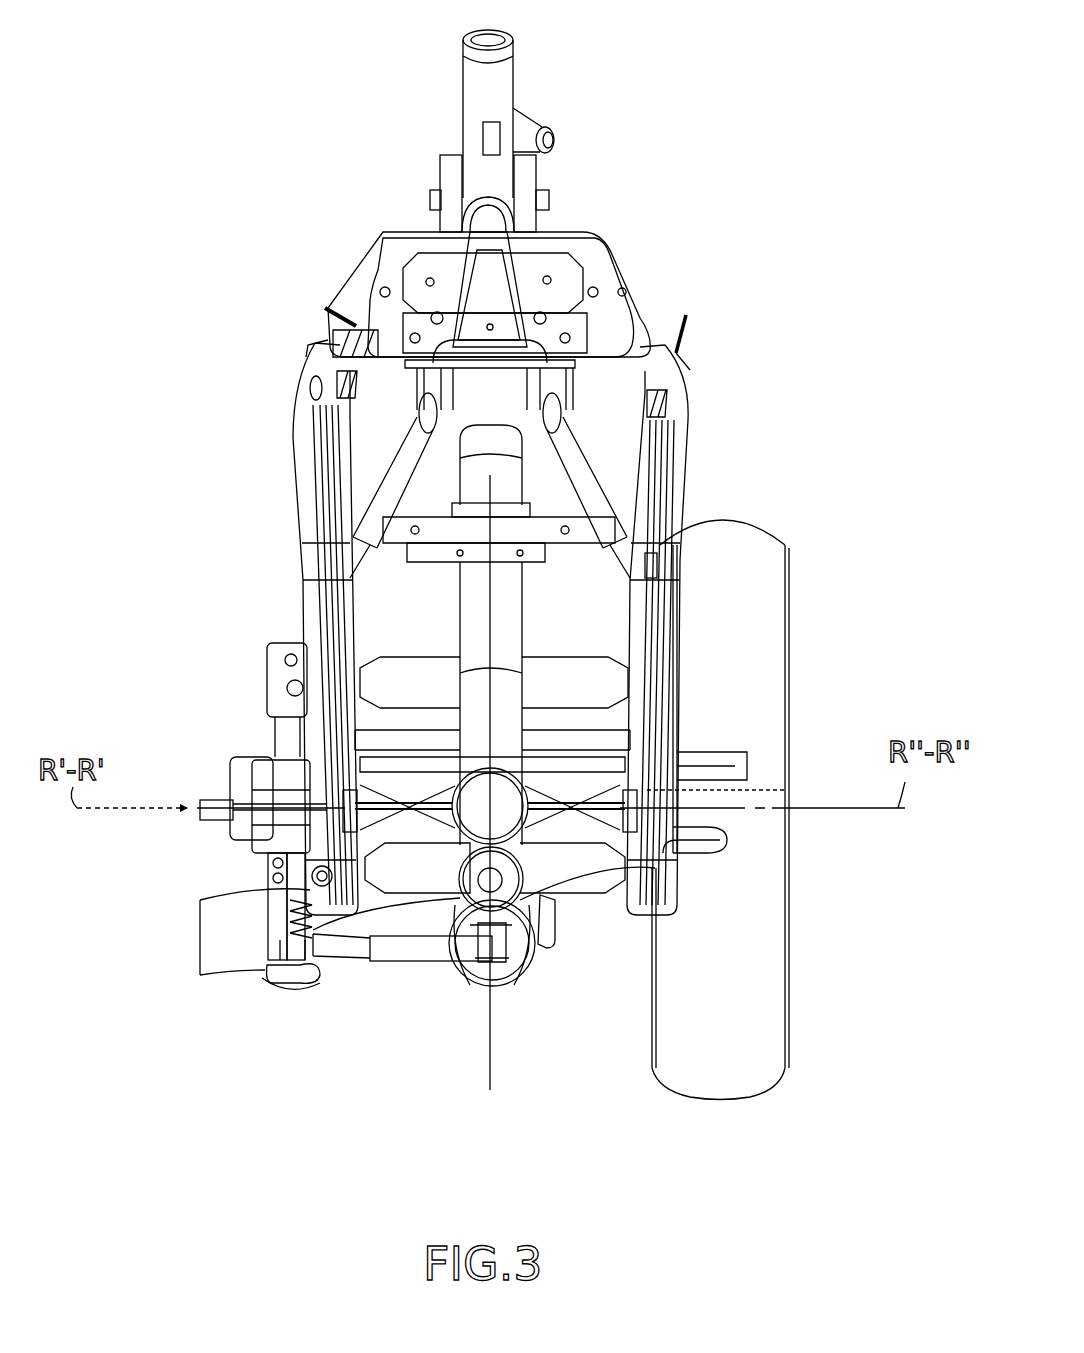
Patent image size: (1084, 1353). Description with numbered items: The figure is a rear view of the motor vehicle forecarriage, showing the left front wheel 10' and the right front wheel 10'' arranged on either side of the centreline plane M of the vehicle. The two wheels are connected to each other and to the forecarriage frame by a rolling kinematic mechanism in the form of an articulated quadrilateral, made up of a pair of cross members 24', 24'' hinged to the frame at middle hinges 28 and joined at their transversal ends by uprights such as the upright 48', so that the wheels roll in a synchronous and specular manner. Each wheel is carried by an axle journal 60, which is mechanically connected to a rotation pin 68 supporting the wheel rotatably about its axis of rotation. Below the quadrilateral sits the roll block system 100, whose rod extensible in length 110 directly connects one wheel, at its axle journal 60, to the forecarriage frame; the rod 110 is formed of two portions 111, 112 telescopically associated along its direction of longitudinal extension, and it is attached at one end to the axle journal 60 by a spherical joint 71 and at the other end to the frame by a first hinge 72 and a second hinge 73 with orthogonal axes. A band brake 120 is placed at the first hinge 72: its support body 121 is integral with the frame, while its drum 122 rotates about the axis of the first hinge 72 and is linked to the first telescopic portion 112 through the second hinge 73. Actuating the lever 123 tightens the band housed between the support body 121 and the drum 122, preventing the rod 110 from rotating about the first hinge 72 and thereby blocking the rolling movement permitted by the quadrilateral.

The left front wheel 10' is at (184, 687).
The right front wheel 10'' is at (783, 794).
The cross member 24' is at (306, 629).
The cross member 24'' is at (660, 630).
The middle hinge 28 is at (266, 963).
The upright 48' is at (212, 814).
The axle journal 60 is at (255, 882).
The rotation pin 68 is at (205, 803).
The spherical joint 71 is at (232, 1005).
The first hinge 72 is at (535, 975).
The second hinge 73 is at (505, 992).
The roll block system 100 is at (410, 1200).
The rod extensible in length 110 is at (385, 1002).
The portion of the rod 111 is at (337, 955).
The first telescopic portion 112 is at (405, 962).
The band brake 120 is at (480, 1018).
The support body 121 is at (655, 882).
The drum 122 is at (525, 952).
The actuation lever 123 is at (545, 905).
The centreline plane M is at (485, 495).